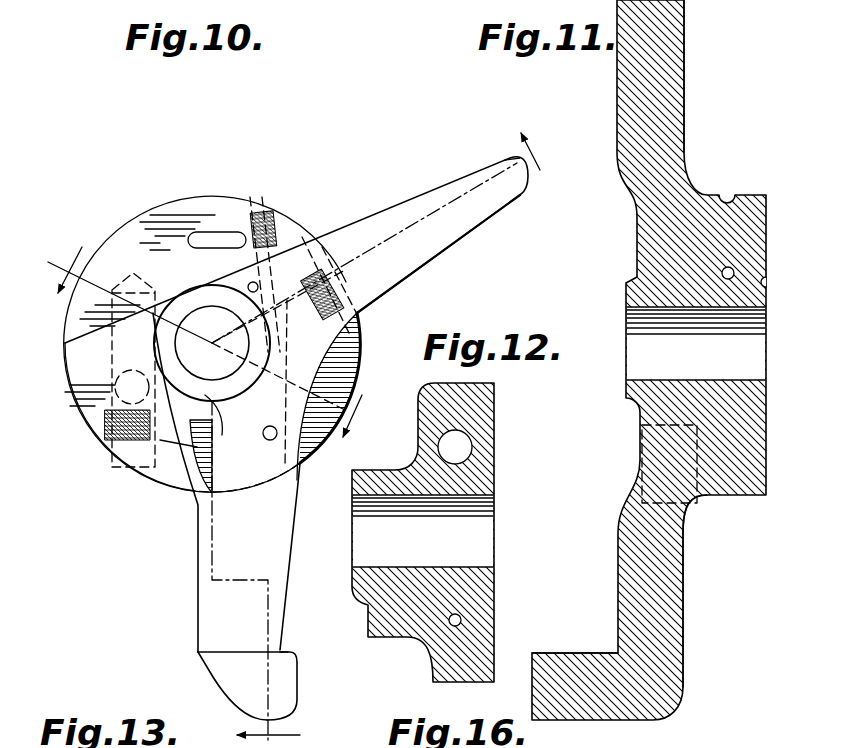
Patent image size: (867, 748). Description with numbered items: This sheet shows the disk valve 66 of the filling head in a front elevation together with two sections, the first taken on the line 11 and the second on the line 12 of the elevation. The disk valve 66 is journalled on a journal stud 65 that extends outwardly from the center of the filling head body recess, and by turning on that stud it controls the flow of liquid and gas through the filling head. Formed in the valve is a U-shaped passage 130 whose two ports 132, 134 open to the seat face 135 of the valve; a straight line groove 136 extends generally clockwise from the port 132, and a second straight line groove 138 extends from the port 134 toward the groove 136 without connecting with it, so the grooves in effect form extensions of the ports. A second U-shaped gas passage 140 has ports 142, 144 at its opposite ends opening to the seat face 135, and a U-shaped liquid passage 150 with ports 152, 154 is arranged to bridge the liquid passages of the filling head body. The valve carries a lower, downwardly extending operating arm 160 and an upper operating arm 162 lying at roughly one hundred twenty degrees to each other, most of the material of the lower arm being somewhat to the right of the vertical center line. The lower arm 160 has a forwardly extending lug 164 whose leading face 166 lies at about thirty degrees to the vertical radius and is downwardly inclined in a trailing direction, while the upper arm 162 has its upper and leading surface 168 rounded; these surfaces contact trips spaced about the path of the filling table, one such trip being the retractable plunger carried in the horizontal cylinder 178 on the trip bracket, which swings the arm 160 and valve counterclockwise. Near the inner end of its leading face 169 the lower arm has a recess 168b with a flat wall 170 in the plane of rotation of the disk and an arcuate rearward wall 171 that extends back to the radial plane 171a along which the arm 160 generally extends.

In FIG. 10, the section line 11— 11 is at (396, 434).
In FIG. 10, the section line 12— 12 is at (205, 342).
In FIG. 10, the journal stud 65 is at (203, 323).
In FIG. 10, the disk valve 66 is at (184, 200).
In FIG. 11, the disk valve 66 is at (660, 240).
In FIG. 12, the disk valve 66 is at (483, 472).
In FIG. 10, the passage 130 is at (320, 243).
In FIG. 11, the passage 130 is at (740, 272).
In FIG. 10, the port 132 is at (293, 233).
In FIG. 10, the port 134 is at (222, 387).
In FIG. 11, the seat face 135 is at (766, 406).
In FIG. 12, the seat face 135 is at (494, 580).
In FIG. 10, the straight line groove 136 is at (232, 242).
In FIG. 10, the straight line groove 138 is at (251, 249).
In FIG. 11, the straight line groove 138 is at (764, 284).
In FIG. 10, the second U-shaped gas passage 140 is at (320, 385).
In FIG. 12, the second U-shaped gas passage 140 is at (463, 620).
In FIG. 10, the port 142 is at (356, 310).
In FIG. 10, the port 144 is at (293, 494).
In FIG. 10, the U-shaped liquid passage 150 is at (112, 385).
In FIG. 12, the U-shaped liquid passage 150 is at (468, 442).
In FIG. 10, the port 152 is at (112, 330).
In FIG. 10, the port 154 is at (108, 430).
In FIG. 10, the lower operating arm 160 is at (213, 598).
In FIG. 11, the lower operating arm 160 is at (668, 598).
In FIG. 10, the upper operating arm 162 is at (403, 181).
In FIG. 11, the upper operating arm 162 is at (677, 104).
In FIG. 10, the lug 164 is at (283, 693).
In FIG. 11, the lug 164 is at (546, 668).
In FIG. 10, the leading face 166 is at (211, 676).
In FIG. 10, the upper leading surface 168 is at (475, 156).
In FIG. 11, the upper leading surface 168 is at (648, 480).
In FIG. 10, the recess 168b is at (200, 460).
In FIG. 10, the face 169 is at (198, 549).
In FIG. 10, the flat wall 170 is at (197, 447).
In FIG. 10, the arcuate wall 171 is at (210, 462).
In FIG. 10, the radial plane 171a is at (214, 428).
In FIG. 11, the cylinder 178 is at (714, 488).